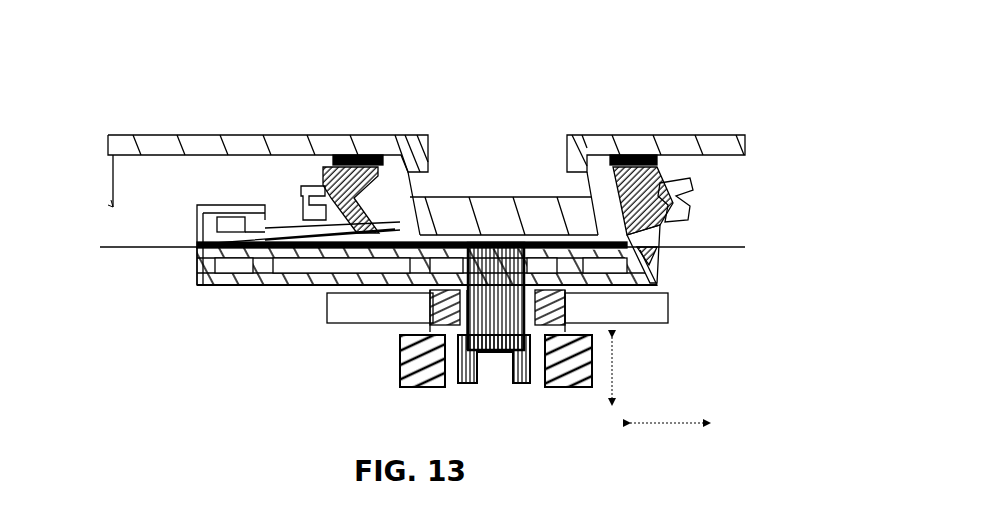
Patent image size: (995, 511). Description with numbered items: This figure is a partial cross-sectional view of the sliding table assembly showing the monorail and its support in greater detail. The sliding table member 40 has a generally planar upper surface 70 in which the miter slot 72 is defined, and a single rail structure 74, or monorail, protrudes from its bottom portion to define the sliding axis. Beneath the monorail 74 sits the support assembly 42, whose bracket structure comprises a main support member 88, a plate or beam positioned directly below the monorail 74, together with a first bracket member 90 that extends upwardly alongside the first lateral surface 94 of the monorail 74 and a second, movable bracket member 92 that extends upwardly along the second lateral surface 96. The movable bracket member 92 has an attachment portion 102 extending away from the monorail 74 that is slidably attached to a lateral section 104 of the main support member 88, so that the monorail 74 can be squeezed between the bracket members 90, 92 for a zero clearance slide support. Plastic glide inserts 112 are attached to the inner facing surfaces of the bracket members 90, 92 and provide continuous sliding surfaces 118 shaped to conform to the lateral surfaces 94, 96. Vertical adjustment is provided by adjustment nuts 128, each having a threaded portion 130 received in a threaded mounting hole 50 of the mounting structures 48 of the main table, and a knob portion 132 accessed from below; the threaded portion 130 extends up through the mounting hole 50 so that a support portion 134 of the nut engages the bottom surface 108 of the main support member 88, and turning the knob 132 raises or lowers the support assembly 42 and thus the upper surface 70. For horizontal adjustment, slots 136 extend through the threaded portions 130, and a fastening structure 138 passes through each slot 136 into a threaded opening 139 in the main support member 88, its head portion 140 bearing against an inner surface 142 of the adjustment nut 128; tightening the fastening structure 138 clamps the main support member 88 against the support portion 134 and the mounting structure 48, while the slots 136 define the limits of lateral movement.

The sliding table member 40 is at (272, 88).
The support assembly 42 is at (426, 260).
The mounting structures 48 is at (668, 322).
The mounting holes 50 is at (567, 300).
The upper surface 70 is at (165, 135).
The miter slot 72 is at (480, 160).
The rail structure (monorail) 74 is at (672, 180).
The main support member 88 is at (313, 288).
The first bracket member 90 is at (676, 222).
The second bracket member (movable bracket member) 92 is at (317, 184).
The first lateral surface 94 is at (650, 160).
The second lateral surface 96 is at (347, 150).
The attachment portion 102 is at (195, 222).
The lateral section 104 is at (197, 268).
The bottom surface 108 is at (208, 287).
The glide inserts 112 is at (370, 160).
The sliding surfaces 118 is at (417, 145).
The adjustment nuts 128 is at (389, 376).
The threaded portion 130 is at (440, 303).
The knob portion 132 is at (572, 390).
The support portion 134 is at (543, 260).
The slots 136 is at (443, 387).
The fastening structure 138 is at (520, 384).
The threaded opening 139 is at (487, 247).
The head portion 140 is at (477, 378).
The inner surface 142 is at (538, 388).